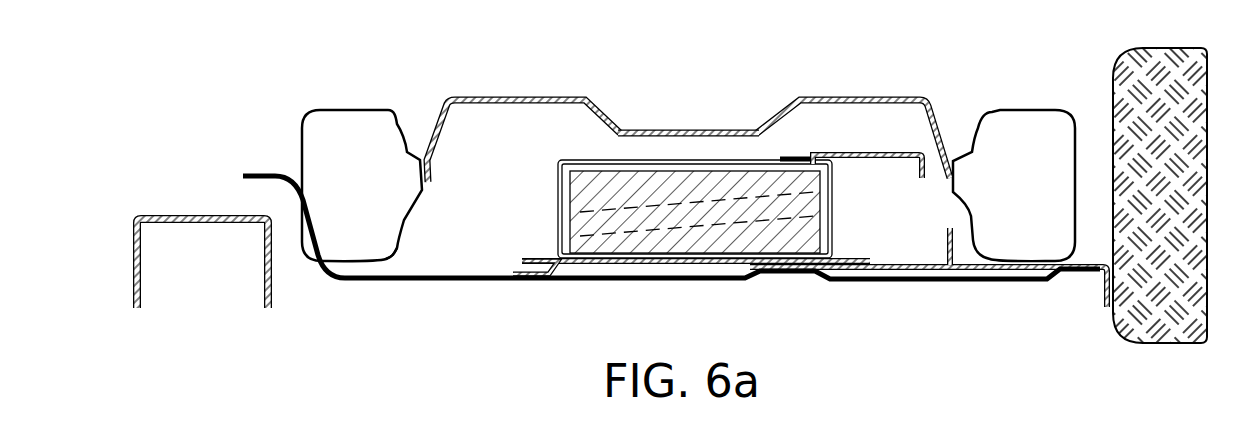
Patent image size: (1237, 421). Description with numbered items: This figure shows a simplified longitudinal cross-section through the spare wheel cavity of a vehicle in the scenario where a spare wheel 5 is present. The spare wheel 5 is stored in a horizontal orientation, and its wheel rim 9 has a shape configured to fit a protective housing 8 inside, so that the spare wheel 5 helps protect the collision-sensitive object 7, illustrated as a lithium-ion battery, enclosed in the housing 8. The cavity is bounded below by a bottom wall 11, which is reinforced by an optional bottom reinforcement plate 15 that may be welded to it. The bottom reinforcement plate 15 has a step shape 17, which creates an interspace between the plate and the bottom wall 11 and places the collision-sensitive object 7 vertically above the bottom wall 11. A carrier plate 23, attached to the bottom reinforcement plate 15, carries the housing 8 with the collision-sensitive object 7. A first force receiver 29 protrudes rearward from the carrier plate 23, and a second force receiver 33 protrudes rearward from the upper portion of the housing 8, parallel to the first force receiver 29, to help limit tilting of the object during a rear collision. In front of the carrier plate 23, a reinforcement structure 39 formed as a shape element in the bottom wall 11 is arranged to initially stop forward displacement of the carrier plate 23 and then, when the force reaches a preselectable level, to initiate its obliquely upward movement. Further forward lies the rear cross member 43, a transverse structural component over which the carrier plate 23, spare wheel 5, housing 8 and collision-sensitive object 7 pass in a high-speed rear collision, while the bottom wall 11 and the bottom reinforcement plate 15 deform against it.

The spare wheel 5 is at (302, 110).
The collision-sensitive object 7 is at (640, 195).
The protective housing 8 is at (700, 140).
The wheel rim 9 is at (517, 97).
The bottom wall 11 is at (477, 279).
The bottom reinforcement plate 15 is at (653, 263).
The step shape 17 is at (562, 281).
The carrier plate 23 is at (887, 272).
The first force receiver 29 is at (953, 242).
The second force receiver 33 is at (865, 153).
The reinforcement structure 39 is at (417, 261).
The rear cross member 43 is at (272, 297).